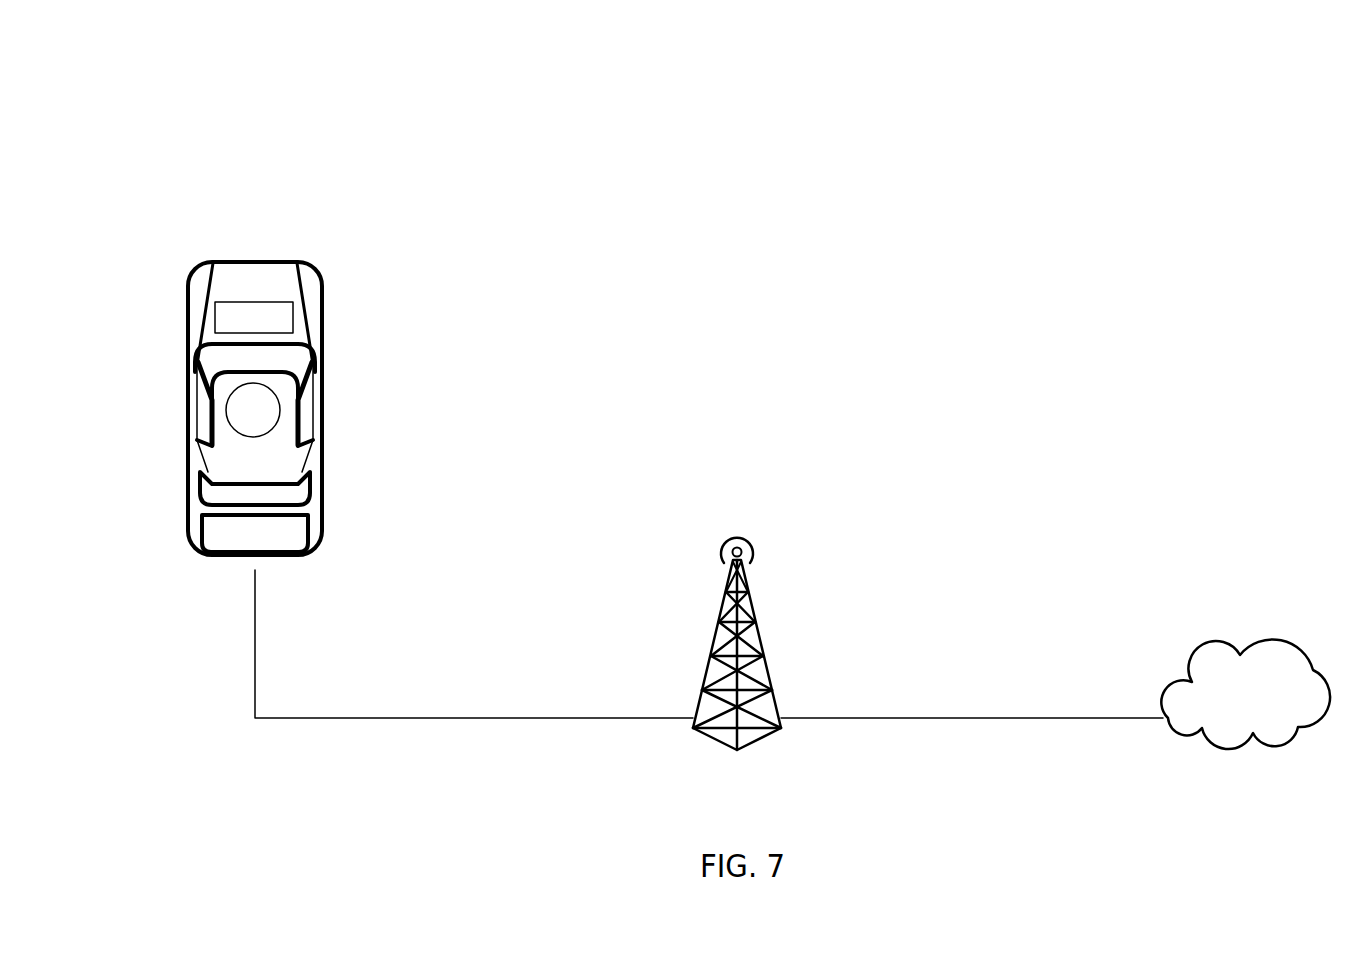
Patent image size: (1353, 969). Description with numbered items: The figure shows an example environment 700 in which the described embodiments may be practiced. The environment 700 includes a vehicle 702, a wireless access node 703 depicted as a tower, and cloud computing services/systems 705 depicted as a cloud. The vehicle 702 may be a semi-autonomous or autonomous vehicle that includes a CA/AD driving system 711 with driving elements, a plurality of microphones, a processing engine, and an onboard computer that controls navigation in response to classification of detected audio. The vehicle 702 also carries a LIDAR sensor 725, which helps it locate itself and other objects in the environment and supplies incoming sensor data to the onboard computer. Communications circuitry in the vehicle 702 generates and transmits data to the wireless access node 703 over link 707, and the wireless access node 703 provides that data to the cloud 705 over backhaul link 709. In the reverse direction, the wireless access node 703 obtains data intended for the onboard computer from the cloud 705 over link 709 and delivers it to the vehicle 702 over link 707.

The environment 700 is at (1066, 99).
The vehicle 702 is at (321, 410).
The wireless access node 703 is at (740, 532).
The cloud computing services/systems 705 is at (1208, 657).
The link 707 is at (403, 717).
The backhaul link 709 is at (930, 719).
The CA/AD driving system 711 is at (254, 317).
The LIDAR sensor 725 is at (226, 408).